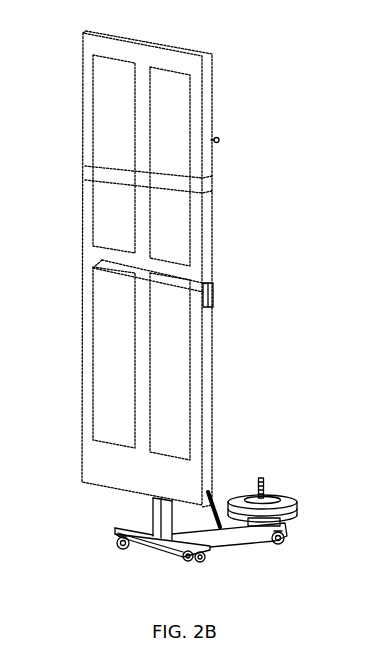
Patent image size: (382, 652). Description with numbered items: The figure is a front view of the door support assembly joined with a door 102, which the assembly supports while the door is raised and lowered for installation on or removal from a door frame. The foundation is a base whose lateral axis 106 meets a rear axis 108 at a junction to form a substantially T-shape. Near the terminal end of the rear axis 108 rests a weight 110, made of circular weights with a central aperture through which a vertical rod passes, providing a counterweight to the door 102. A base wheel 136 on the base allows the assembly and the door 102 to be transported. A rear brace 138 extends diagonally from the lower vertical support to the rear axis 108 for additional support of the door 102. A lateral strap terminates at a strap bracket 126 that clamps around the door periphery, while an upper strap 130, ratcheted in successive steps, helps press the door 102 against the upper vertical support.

The door 102 is at (212, 80).
The upper strap 130 is at (112, 170).
The strap bracket 126 is at (213, 298).
The rear brace 138 is at (220, 528).
The lateral axis 106 is at (115, 532).
The rear axis 108 is at (235, 542).
The weight 110 is at (297, 497).
The base wheel 136 is at (283, 543).